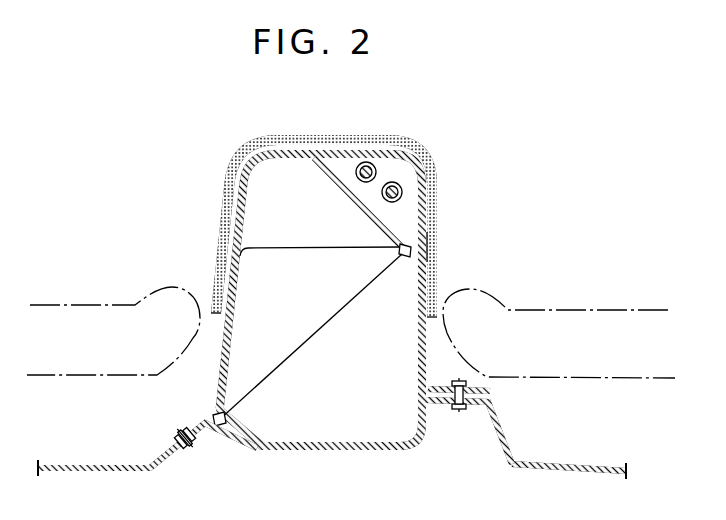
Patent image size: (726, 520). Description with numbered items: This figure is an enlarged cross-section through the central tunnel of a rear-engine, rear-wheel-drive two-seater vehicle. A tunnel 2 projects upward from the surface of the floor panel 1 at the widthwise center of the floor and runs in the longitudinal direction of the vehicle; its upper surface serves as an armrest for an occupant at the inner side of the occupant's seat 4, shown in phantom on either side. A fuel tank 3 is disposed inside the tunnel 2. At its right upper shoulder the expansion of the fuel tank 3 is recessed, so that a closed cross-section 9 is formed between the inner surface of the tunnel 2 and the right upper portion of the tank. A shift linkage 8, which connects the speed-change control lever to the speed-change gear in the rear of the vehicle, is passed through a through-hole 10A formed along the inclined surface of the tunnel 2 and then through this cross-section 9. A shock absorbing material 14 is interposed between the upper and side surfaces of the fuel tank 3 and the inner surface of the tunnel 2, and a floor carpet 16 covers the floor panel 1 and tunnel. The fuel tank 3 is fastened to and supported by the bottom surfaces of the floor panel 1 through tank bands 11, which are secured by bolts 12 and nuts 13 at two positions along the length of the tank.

The floor panel 1 is at (566, 467).
The tunnel 2 is at (437, 214).
The fuel tank 3 is at (338, 172).
The occupant's seat 4 is at (88, 303).
The shift linkage 8 is at (403, 192).
The closed cross-section 9 is at (395, 174).
The through-hole 10A is at (398, 183).
The tank band 11 is at (435, 412).
The bolt 12 is at (466, 410).
The nut 13 is at (478, 389).
The shock absorbing material 14 is at (288, 138).
The floor carpet 16 is at (437, 247).